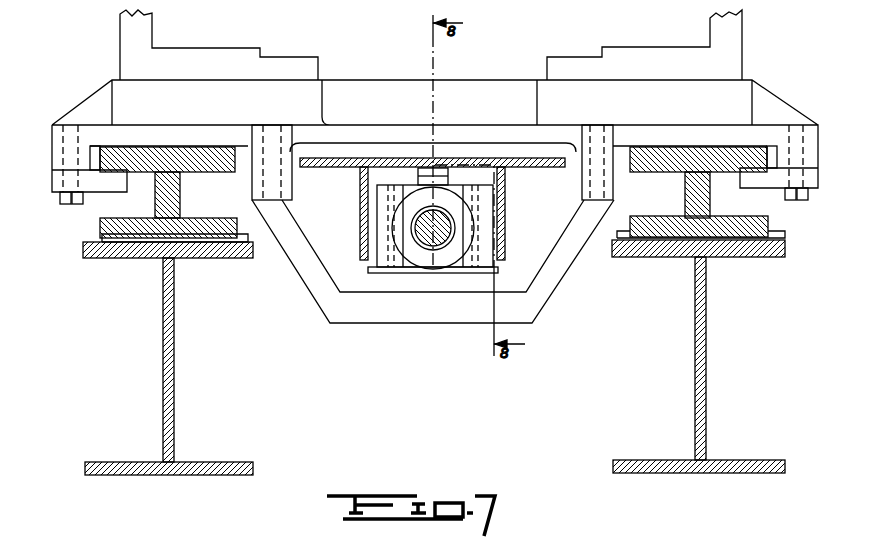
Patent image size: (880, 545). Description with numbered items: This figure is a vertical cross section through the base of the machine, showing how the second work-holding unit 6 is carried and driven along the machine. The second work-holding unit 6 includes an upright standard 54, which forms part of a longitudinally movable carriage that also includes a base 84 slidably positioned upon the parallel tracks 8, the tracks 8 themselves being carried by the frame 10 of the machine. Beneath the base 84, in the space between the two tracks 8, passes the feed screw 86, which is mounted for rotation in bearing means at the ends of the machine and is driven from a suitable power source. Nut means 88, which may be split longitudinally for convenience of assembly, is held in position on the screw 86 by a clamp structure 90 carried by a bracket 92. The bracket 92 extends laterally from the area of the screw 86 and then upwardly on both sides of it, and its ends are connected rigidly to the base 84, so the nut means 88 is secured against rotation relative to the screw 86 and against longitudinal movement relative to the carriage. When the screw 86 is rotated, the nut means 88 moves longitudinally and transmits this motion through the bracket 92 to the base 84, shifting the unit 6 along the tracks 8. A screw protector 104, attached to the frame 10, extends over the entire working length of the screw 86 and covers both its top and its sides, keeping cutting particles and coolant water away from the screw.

The second work-holding unit 6 is at (670, 38).
The tracks 8 is at (104, 230).
The frame 10 is at (178, 421).
The upright standard 54 is at (125, 32).
The base 84 is at (95, 115).
The feed screw 86 is at (414, 216).
The nut means 88 is at (468, 230).
The clamp structure 90 is at (386, 240).
The bracket 92 is at (312, 284).
The screw protector 104 is at (539, 172).